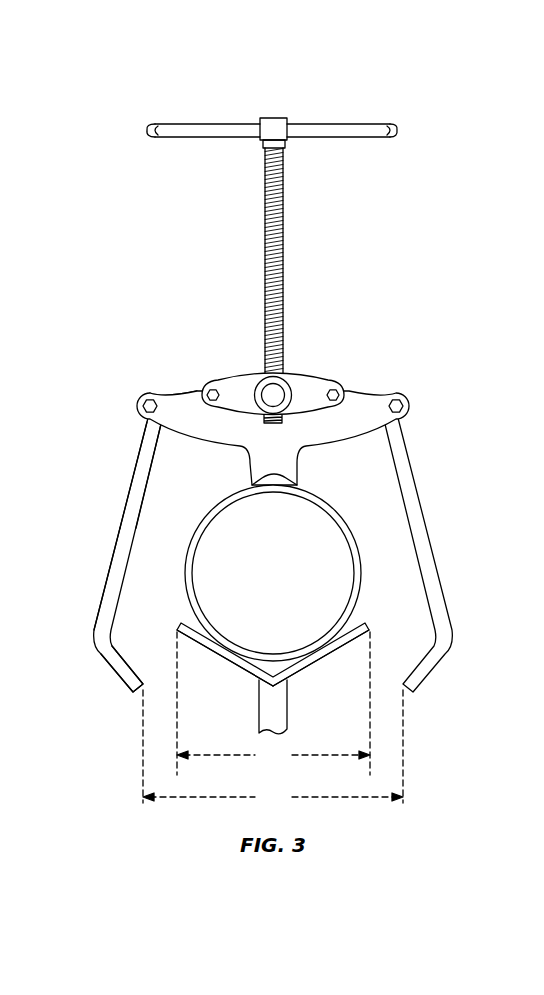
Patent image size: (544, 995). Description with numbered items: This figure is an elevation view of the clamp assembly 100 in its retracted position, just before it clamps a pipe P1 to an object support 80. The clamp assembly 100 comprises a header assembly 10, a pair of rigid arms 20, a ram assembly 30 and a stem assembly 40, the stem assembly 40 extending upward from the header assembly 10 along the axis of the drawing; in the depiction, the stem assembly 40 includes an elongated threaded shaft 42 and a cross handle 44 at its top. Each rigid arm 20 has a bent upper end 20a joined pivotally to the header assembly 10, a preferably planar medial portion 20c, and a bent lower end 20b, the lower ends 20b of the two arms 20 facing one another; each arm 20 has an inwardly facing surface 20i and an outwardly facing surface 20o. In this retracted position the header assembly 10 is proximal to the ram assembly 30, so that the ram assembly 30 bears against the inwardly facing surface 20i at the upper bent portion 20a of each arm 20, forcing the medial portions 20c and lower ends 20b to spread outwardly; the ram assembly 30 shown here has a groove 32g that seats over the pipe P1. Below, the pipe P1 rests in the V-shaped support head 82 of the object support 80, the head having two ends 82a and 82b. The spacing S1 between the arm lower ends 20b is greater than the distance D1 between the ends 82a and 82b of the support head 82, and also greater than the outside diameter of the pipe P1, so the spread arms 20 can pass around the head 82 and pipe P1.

The clamp assembly 100 is at (146, 80).
The header assembly 10 is at (226, 378).
The rigid arm 20 is at (118, 503).
The upper end 20a is at (180, 395).
The outwardly facing surface 20o is at (143, 450).
The inwardly facing surface 20i is at (153, 460).
The medial portion 20c is at (117, 567).
The lower end 20b is at (118, 683).
The ram assembly 30 is at (372, 437).
The pipe groove 32g is at (302, 484).
The stem assembly 40 is at (276, 113).
The threaded shaft 42 is at (283, 229).
The handle bar 44 is at (332, 122).
The object support 80 is at (252, 703).
The V-shaped support head 82 is at (323, 660).
The end of support head 82a is at (179, 626).
The end of support head 82b is at (366, 626).
The pipe P1 is at (353, 560).
The distance D1 is at (273, 703).
The spacing S1 is at (273, 750).